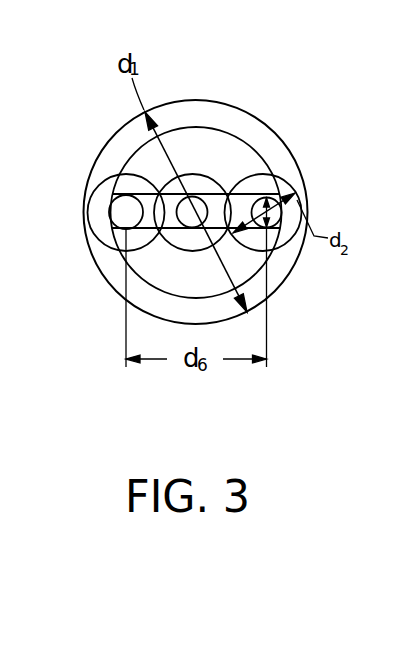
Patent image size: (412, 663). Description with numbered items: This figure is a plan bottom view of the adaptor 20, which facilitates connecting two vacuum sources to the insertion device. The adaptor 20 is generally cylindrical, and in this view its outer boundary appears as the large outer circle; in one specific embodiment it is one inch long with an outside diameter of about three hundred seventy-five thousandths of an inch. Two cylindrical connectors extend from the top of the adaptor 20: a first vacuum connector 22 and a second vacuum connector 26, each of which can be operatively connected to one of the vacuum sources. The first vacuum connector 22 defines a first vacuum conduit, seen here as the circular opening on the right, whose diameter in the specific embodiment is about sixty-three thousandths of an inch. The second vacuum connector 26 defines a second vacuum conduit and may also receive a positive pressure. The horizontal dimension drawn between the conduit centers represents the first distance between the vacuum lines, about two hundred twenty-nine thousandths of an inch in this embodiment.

The adaptor 20 is at (199, 98).
The first vacuum connector 22 is at (301, 219).
The second vacuum connector 26 is at (83, 212).